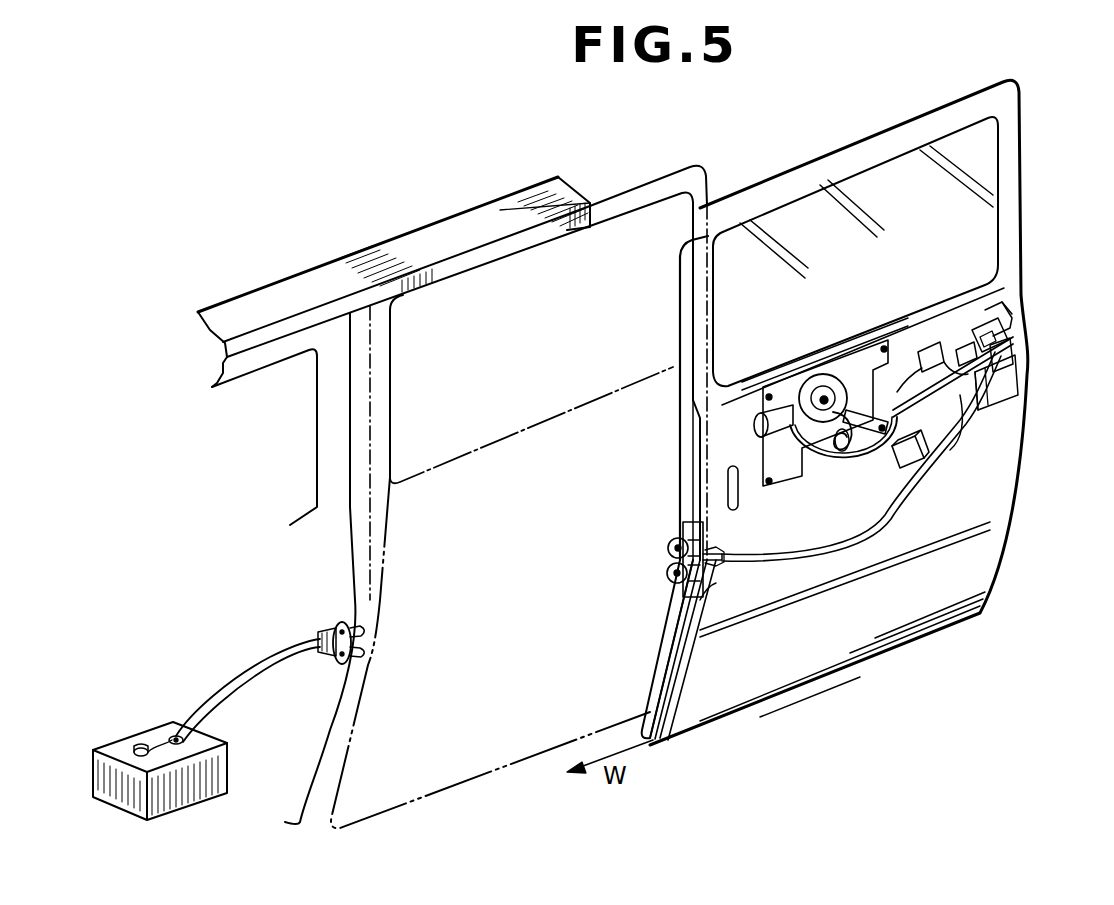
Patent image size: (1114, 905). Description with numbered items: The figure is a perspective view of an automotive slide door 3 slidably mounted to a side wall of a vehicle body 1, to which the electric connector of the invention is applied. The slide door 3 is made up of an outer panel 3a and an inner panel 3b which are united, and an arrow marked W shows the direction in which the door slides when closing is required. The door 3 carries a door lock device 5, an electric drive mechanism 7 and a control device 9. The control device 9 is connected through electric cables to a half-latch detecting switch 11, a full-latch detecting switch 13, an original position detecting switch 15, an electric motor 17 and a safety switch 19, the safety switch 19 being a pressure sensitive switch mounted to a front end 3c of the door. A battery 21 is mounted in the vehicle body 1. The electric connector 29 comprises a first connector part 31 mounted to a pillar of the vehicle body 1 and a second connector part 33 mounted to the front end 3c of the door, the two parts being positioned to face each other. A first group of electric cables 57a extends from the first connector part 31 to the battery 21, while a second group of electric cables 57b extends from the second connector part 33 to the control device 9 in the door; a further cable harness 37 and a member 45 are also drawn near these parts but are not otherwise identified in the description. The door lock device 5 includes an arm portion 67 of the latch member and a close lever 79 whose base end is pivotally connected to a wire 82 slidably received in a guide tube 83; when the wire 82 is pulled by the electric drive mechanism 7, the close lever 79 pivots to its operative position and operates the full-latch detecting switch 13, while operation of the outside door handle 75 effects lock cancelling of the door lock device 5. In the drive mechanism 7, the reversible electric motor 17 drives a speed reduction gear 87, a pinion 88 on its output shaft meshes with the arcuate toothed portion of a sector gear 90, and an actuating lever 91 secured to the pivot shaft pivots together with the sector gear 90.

The vehicle body 1 is at (428, 243).
The slide door 3 is at (832, 757).
The outer panel 3a is at (780, 687).
The inner panel 3b is at (680, 697).
The front end 3c is at (667, 633).
The door lock device 5 is at (1015, 395).
The electric drive mechanism 7 is at (780, 378).
The control device 9 is at (912, 470).
The half-latch detecting switch 11 is at (964, 416).
The full-latch detecting switch 13 is at (962, 332).
The original position detecting switch 15 is at (858, 476).
The electric motor 17 is at (762, 384).
The safety switch 19 is at (660, 670).
The battery 21 is at (193, 800).
The electric connector 29 is at (312, 620).
The first connector part 31 is at (327, 621).
The second connector part 33 is at (668, 570).
The harness 37 is at (367, 630).
The roller arm 45 is at (713, 593).
The first group of electric cables 57a is at (253, 683).
The second group of electric cables 57b is at (700, 517).
The arm portion 67 is at (1005, 318).
The outside door handle 75 is at (728, 488).
The close lever 79 is at (1005, 350).
The wire 82 is at (882, 362).
The guide tube 83 is at (925, 332).
The speed reduction gear 87 is at (817, 375).
The pinion 88 is at (838, 378).
The sector gear 90 is at (863, 360).
The actuating lever 91 is at (807, 443).